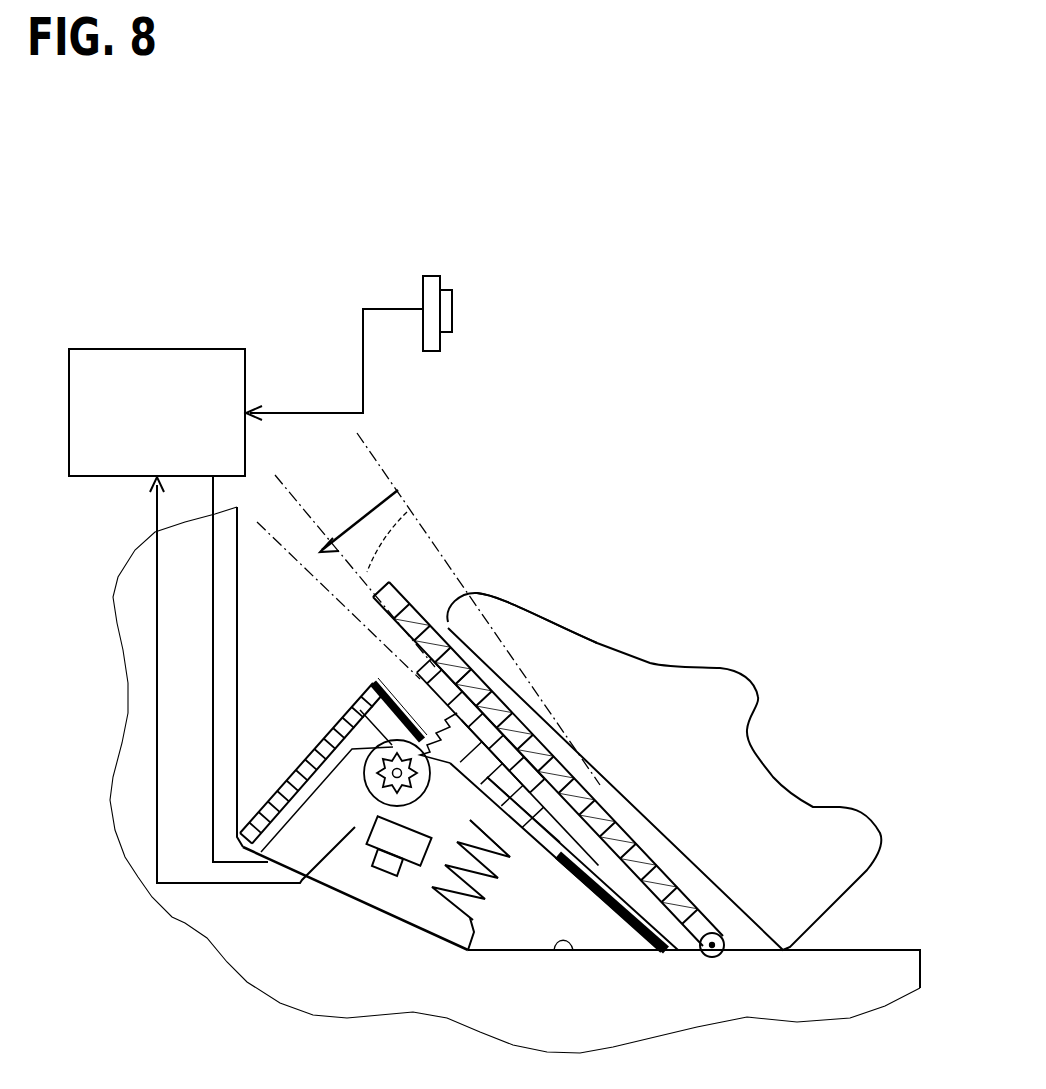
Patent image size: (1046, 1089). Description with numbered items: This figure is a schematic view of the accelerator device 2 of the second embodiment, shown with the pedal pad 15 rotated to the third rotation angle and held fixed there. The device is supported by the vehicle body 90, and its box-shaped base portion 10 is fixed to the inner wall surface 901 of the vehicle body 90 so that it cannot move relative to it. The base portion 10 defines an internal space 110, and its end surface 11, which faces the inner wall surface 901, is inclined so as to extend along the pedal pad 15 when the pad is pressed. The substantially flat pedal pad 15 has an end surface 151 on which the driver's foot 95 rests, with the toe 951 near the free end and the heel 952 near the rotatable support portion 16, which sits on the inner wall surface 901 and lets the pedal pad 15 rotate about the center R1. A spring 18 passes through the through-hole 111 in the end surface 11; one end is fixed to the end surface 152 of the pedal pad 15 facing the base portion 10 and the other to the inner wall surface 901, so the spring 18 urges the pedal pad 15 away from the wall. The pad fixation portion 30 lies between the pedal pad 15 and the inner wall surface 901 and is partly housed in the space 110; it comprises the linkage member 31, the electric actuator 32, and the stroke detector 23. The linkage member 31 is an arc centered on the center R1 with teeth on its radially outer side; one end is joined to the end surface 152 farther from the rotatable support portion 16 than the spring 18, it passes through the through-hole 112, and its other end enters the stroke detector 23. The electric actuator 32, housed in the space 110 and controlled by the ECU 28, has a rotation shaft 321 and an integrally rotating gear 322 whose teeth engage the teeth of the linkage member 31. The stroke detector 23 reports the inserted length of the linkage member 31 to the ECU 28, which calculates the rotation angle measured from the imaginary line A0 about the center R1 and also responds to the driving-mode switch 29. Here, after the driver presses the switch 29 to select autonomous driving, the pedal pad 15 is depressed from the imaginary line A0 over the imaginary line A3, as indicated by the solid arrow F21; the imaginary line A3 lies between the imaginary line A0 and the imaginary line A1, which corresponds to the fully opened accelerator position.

The accelerator device 2 is at (508, 457).
The base portion 10 is at (360, 770).
The end surface 11 is at (425, 655).
The pedal pad 15 is at (664, 866).
The rotatable support portion 16 is at (712, 935).
The spring 18 is at (465, 952).
The stroke detector 23 is at (378, 822).
The ECU 28 is at (80, 402).
The switch 29 is at (445, 315).
The pad fixation portion 30 is at (291, 727).
The linkage member 31 is at (545, 760).
The electric actuator 32 is at (352, 742).
The vehicle body 90 is at (127, 804).
The foot 95 is at (760, 687).
The space 110 is at (528, 942).
The through-hole 111 is at (537, 838).
The through-hole 112 is at (474, 670).
The end surface 151 is at (445, 622).
The end surface 152 is at (600, 870).
The rotation shaft 321 is at (377, 677).
The gear 322 is at (380, 653).
The inner wall surface 901 is at (565, 942).
The toe 951 is at (500, 612).
The heel 952 is at (790, 943).
The imaginary line A0 is at (366, 447).
The imaginary line A1 is at (313, 578).
The imaginary line A3 is at (289, 484).
The solid arrow F21 is at (358, 518).
The center R1 is at (712, 958).